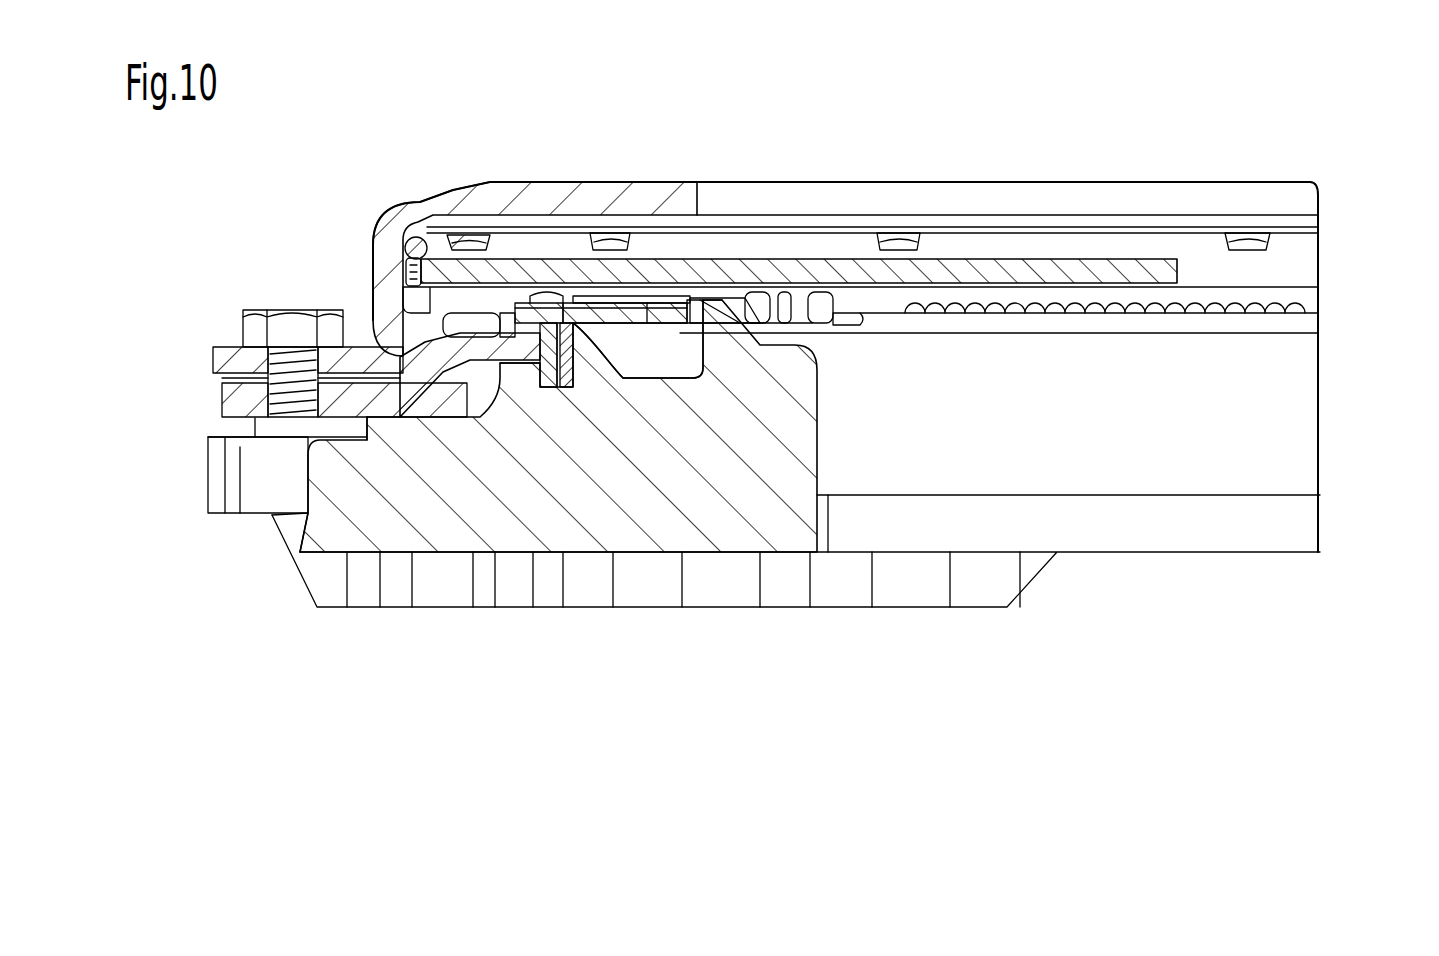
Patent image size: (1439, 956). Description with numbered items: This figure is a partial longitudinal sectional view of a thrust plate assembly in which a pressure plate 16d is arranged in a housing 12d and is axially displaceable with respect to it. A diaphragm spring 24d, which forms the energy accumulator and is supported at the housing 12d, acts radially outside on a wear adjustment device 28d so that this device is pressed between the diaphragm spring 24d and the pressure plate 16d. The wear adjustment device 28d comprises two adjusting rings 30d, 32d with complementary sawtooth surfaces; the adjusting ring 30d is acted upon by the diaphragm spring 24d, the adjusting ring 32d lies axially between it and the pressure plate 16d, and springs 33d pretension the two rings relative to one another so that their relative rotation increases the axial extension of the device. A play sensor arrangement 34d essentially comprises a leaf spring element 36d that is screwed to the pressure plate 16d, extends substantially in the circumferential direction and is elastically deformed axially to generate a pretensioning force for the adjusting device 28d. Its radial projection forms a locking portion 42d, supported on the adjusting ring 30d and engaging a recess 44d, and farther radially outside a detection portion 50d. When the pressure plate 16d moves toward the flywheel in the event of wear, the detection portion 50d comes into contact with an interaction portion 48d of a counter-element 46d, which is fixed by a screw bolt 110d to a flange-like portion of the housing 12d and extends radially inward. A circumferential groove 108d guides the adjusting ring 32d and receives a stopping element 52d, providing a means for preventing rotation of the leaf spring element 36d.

The housing 12d is at (565, 183).
The pressure plate 16d is at (395, 528).
The diaphragm spring 24d is at (1003, 260).
The wear adjustment device 28d is at (627, 400).
The adjusting ring 30d is at (538, 357).
The adjusting ring 32d is at (560, 392).
The springs 33d is at (1298, 310).
The play sensor arrangement 34d is at (713, 304).
The leaf spring element 36d is at (636, 297).
The locking portion 42d is at (563, 305).
The recess 44d is at (545, 296).
The counter-element 46d is at (417, 377).
The interaction portion 48d is at (318, 520).
The detection portion 50d is at (452, 200).
The stopping element 52d is at (586, 350).
The circumferential groove 108d is at (550, 390).
The screw bolt 110d is at (243, 347).